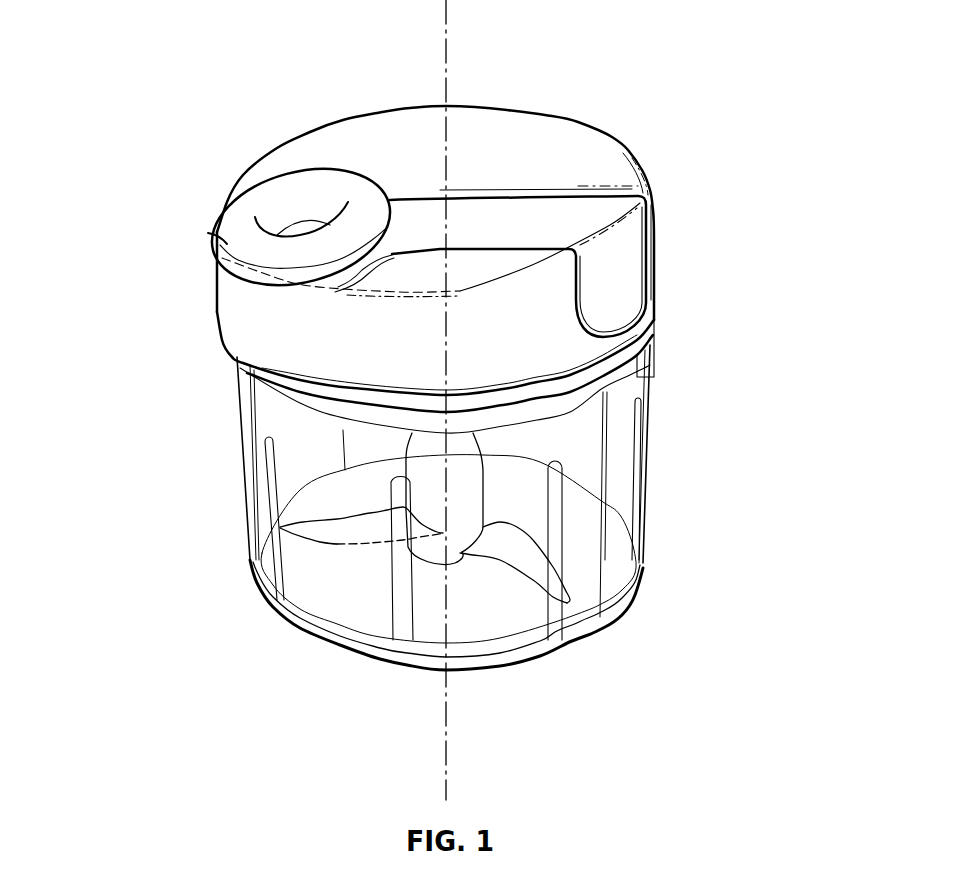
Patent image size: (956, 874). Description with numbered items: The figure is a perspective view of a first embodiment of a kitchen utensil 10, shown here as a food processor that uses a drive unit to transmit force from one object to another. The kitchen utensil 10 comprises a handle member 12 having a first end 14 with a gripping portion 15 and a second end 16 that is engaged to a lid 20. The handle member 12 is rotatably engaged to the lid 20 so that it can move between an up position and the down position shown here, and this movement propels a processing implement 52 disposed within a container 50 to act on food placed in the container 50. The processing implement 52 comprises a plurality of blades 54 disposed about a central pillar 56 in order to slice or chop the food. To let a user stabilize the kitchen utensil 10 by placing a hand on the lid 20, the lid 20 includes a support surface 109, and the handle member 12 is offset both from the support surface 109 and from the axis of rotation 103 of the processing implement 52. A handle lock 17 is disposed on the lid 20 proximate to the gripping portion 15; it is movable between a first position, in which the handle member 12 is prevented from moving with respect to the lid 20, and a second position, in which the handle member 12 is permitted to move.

The kitchen utensil 10 is at (690, 397).
The handle member 12 is at (538, 217).
The first end 14 is at (365, 195).
The gripping portion 15 is at (213, 233).
The second end 16 is at (618, 263).
The handle lock 17 is at (308, 222).
The lid 20 is at (466, 348).
The container 50 is at (646, 566).
The processing implement 52 is at (497, 490).
The blades 54 is at (367, 539).
The central pillar 56 is at (455, 494).
The axis of rotation 103 is at (446, 737).
The support surface 109 is at (405, 137).